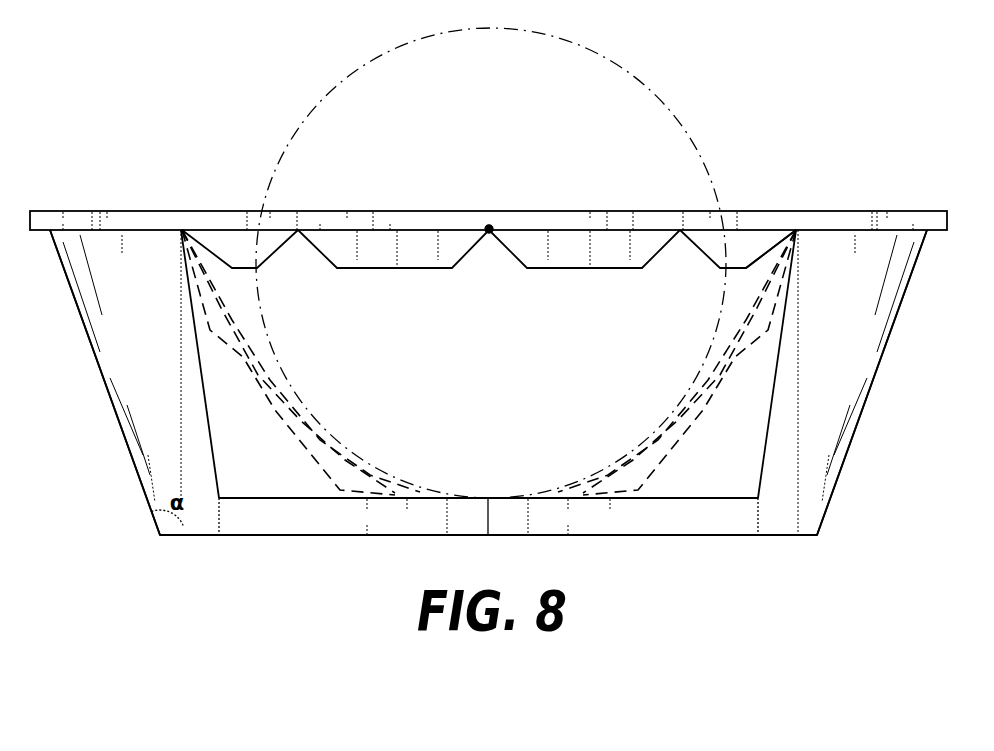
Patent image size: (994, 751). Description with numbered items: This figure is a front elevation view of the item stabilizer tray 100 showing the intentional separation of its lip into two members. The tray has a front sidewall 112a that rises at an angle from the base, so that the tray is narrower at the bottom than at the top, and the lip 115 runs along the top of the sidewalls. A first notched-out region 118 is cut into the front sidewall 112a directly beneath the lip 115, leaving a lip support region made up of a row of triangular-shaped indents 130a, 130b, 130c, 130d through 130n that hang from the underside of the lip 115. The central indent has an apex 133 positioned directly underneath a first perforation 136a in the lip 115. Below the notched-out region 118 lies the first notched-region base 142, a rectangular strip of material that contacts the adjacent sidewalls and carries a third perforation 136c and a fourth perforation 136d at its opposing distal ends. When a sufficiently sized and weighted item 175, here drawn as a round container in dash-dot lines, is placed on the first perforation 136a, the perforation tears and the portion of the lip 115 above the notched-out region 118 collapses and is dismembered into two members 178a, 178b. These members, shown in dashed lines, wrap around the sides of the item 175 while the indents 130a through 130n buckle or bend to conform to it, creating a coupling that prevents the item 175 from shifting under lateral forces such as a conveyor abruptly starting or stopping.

The item stabilizer tray 100 is at (832, 548).
The lip 115 is at (800, 223).
The front sidewall 112a is at (114, 316).
The first notched-out region 118 is at (262, 492).
The first notched-region base 142 is at (585, 518).
The first perforation 136a is at (489, 229).
The third perforation 136c is at (224, 524).
The fourth perforation 136d is at (757, 520).
The apex 133 is at (489, 229).
The triangular-shaped indent 130a is at (202, 268).
The triangular-shaped indent 130b is at (305, 271).
The triangular-shaped indent 130c is at (489, 270).
The triangular-shaped indent 130d is at (690, 270).
The triangular-shaped indent 130n is at (790, 258).
The item 175 is at (480, 96).
The member 178a is at (300, 410).
The member 178b is at (682, 413).